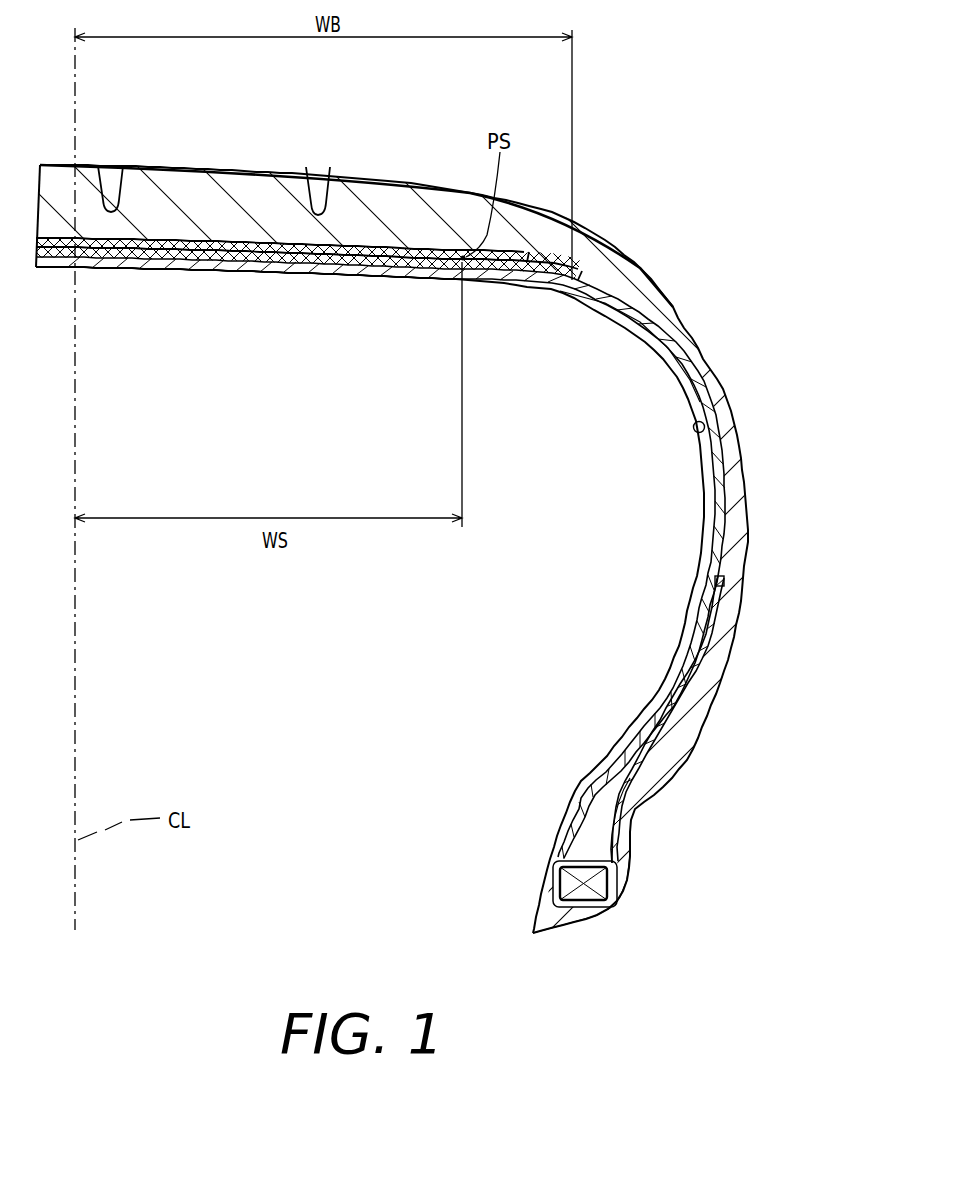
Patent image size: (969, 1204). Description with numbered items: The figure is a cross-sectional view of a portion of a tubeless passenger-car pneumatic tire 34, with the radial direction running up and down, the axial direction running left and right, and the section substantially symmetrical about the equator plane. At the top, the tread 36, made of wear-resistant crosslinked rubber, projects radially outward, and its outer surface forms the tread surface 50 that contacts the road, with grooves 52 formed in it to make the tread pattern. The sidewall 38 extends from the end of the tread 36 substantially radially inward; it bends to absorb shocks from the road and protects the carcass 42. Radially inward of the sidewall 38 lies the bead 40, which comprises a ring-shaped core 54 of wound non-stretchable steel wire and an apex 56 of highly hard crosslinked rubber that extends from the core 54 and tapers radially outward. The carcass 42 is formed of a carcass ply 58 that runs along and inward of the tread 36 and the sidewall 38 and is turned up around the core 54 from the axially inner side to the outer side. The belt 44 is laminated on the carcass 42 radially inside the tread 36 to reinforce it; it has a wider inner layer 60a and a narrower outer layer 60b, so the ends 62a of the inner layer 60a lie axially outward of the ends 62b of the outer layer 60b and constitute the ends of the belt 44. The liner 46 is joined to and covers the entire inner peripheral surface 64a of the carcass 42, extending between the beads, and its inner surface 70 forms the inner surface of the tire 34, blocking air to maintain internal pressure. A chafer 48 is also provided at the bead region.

The pneumatic tire 34 is at (730, 86).
The tread 36 is at (598, 205).
The sidewall 38 is at (756, 464).
The bead 40 is at (745, 815).
The carcass 42 is at (701, 387).
The belt 44 is at (278, 330).
The liner 46 is at (547, 307).
The chafer 48 is at (535, 903).
The tread surface 50 is at (423, 182).
The groove 52 is at (318, 163).
The core 54 is at (600, 883).
The apex 56 is at (598, 837).
The carcass ply 58 is at (718, 596).
The inner layer 60a is at (342, 262).
The outer layer 60b is at (360, 266).
The end of inner layer 62a is at (581, 274).
The end of outer layer 62b is at (528, 252).
The inner peripheral surface 64a is at (705, 418).
The inner surface 70 is at (625, 342).